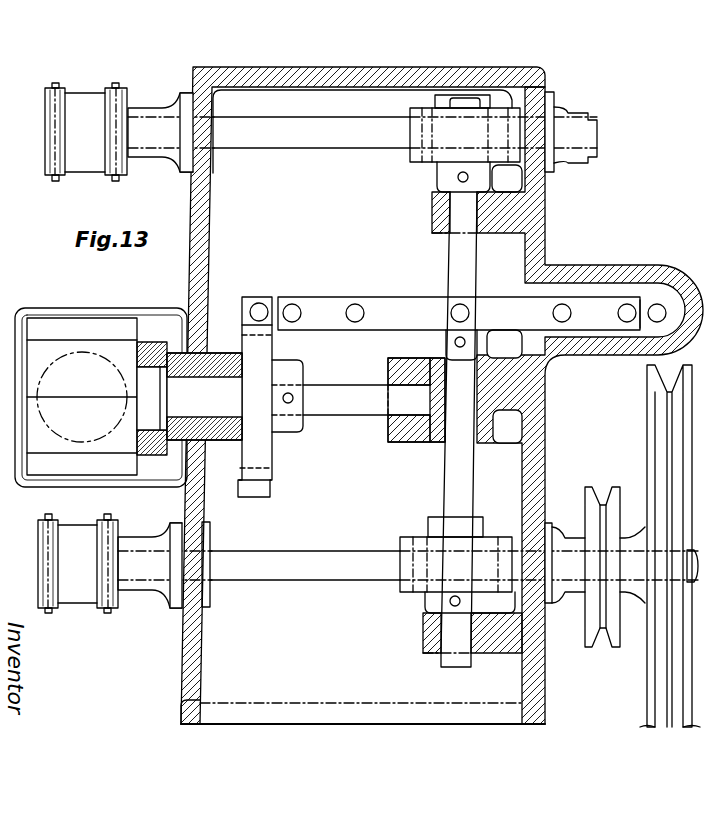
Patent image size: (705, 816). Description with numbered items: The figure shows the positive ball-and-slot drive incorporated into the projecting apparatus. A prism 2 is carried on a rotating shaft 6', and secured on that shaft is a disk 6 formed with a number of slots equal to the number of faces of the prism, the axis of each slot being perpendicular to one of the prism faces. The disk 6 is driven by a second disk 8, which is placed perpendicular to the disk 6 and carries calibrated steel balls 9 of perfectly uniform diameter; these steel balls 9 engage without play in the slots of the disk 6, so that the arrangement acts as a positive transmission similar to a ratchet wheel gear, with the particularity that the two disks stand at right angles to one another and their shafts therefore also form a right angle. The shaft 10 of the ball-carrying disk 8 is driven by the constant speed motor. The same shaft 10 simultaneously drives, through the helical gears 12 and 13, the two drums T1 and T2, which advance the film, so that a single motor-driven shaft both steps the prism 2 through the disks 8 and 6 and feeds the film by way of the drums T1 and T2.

The drum T1 is at (80, 167).
The drum T2 is at (80, 590).
The prism 2 is at (83, 347).
The disk 6 is at (276, 397).
The lever shaft 6' is at (374, 403).
The second disk 8 is at (327, 308).
The steel balls 9 is at (355, 303).
The shaft 10 is at (465, 276).
The helical gear 12 is at (425, 155).
The helical gear 13 is at (435, 575).